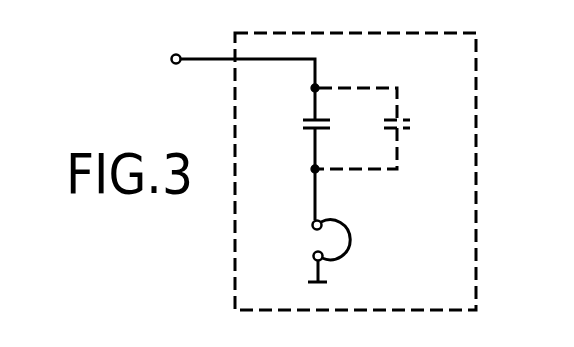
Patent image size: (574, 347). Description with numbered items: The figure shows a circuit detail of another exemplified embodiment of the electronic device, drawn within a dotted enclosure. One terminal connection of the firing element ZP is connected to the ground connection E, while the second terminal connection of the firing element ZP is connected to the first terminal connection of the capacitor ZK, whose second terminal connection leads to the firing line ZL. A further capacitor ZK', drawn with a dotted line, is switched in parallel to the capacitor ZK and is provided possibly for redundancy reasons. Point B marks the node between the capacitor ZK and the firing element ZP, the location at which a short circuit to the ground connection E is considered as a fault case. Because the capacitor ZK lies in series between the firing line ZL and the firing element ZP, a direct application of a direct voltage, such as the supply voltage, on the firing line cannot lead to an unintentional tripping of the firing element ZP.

The firing line ZL is at (320, 72).
The capacitor ZK is at (286, 128).
The capacitor ZK' is at (388, 128).
The point B is at (310, 173).
The firing element ZP is at (352, 232).
The ground connection E is at (312, 280).